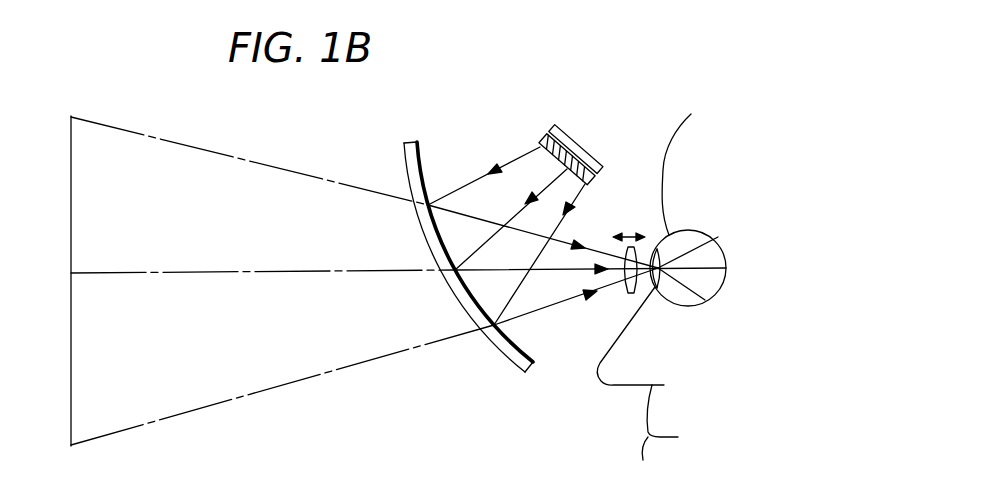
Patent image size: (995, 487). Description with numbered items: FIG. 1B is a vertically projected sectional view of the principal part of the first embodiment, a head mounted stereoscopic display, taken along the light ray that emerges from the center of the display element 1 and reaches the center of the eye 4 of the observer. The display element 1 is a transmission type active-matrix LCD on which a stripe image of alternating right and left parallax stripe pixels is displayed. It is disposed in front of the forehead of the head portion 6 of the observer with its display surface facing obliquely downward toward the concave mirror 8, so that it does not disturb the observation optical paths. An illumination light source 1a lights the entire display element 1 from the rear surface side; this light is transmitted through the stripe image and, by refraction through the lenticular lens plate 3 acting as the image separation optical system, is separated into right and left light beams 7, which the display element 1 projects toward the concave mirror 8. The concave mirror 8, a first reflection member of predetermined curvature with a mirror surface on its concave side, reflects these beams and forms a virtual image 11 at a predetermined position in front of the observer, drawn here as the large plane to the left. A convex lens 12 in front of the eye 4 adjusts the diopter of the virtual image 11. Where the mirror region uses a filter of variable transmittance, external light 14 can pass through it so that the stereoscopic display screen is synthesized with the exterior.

The display element 1 is at (543, 135).
The illumination light source 1a is at (559, 133).
The lenticular lens plate 3 is at (543, 155).
The eye of the observer 4 is at (714, 241).
The head portion of the observer 6 is at (672, 147).
The separated light beams 7 is at (557, 306).
The concave mirror 8 is at (505, 357).
The virtual image 11 is at (72, 323).
The convex lens 12 is at (621, 296).
The external light 14 is at (436, 183).